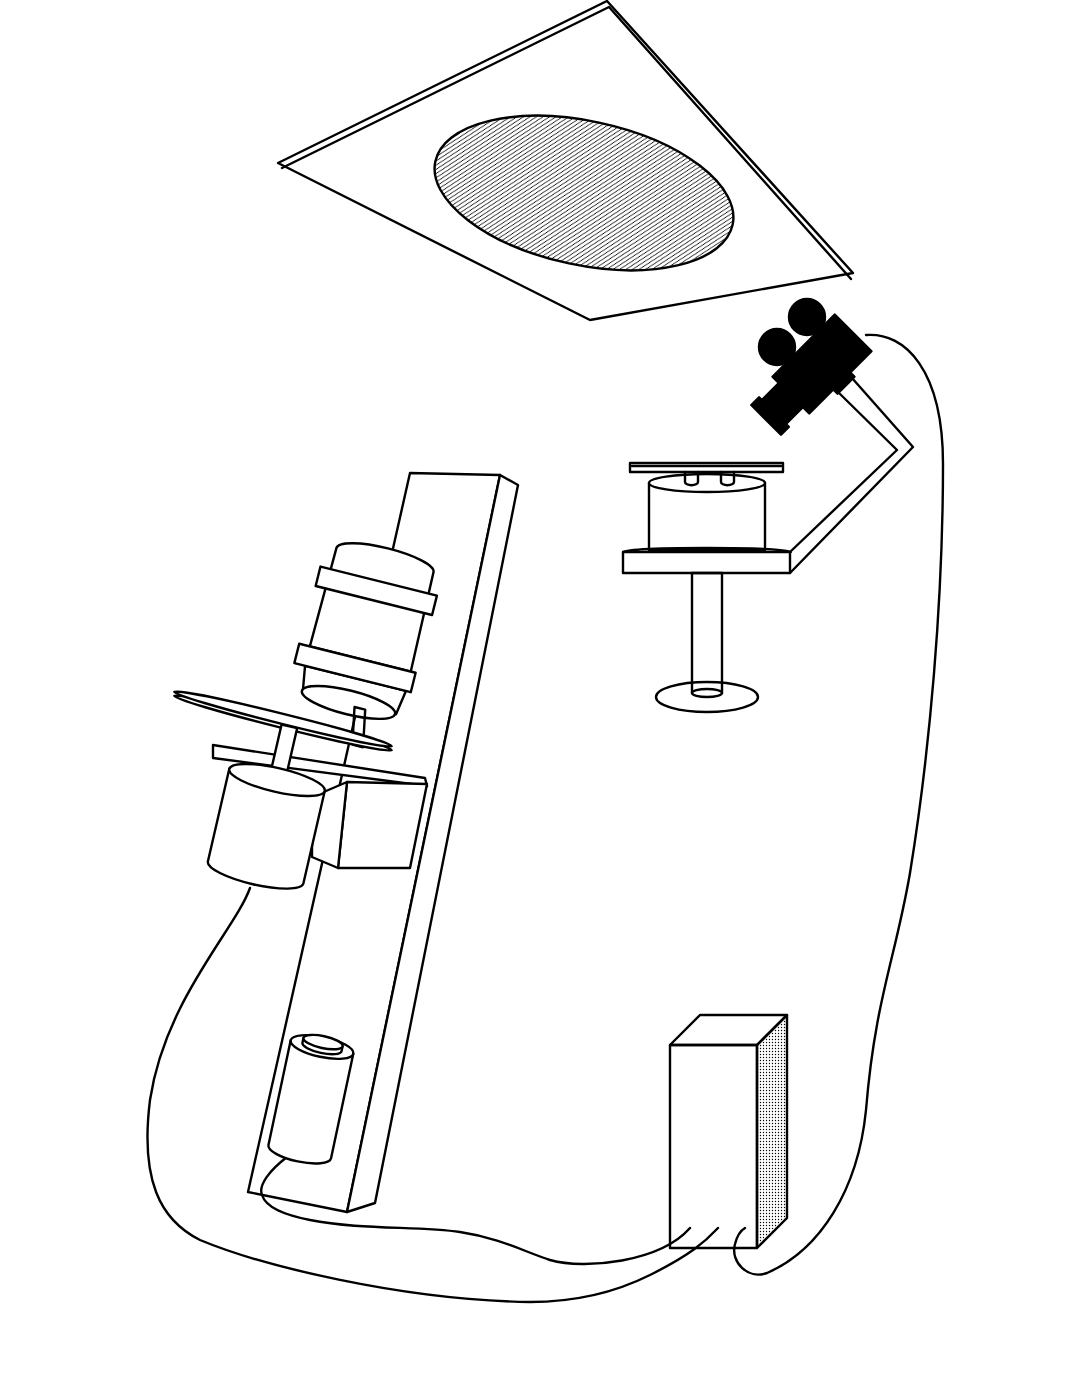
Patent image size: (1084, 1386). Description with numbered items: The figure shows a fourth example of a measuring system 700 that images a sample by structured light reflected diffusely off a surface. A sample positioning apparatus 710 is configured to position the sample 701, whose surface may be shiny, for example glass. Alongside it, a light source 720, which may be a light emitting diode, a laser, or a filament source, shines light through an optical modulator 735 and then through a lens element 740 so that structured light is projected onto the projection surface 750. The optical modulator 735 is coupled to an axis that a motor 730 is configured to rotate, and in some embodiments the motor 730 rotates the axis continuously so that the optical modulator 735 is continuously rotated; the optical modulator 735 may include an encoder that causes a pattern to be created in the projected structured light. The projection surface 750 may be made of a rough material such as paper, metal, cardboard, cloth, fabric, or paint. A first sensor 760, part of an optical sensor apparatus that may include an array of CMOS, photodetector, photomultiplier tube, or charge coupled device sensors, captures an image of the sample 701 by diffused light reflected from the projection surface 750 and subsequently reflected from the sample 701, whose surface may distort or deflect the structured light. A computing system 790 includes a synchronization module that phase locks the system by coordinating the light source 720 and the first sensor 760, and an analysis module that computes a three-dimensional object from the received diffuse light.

The measuring system 700 is at (112, 322).
The sample 701 is at (733, 458).
The sample positioning apparatus 710 is at (767, 515).
The light source 720 is at (300, 1035).
The motor 730 is at (208, 815).
The optical modulator 735 is at (207, 690).
The lens element 740 is at (417, 660).
The projection surface 750 is at (830, 236).
The first sensor 760 is at (850, 322).
The computing system 790 is at (697, 1023).